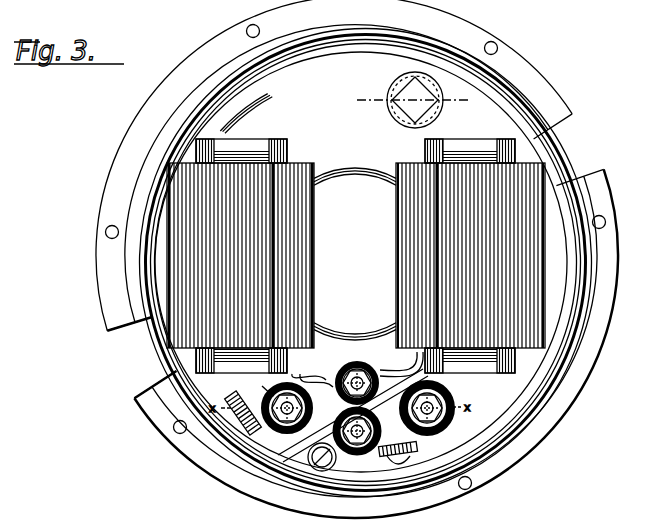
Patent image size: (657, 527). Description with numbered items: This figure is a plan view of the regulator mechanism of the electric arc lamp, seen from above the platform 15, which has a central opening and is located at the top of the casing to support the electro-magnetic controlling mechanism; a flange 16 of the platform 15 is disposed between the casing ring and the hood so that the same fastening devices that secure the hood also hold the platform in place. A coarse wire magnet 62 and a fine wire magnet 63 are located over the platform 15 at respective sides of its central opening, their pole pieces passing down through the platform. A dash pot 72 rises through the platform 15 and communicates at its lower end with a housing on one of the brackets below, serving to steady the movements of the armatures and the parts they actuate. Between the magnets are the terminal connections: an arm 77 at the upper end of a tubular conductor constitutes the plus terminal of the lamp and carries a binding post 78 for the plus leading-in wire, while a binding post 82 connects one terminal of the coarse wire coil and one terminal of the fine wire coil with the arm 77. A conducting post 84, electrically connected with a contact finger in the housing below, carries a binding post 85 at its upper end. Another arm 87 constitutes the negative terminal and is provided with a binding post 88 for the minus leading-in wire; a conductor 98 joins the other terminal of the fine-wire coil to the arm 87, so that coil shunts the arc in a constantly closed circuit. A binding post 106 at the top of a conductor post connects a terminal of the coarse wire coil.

The platform 15 is at (366, 263).
The flange 16 is at (600, 341).
The coarse wire magnet 62 is at (564, 196).
The fine wire magnet 63 is at (173, 180).
The dash pot 72 is at (390, 96).
The arm 77 is at (328, 376).
The binding post 78 is at (233, 398).
The binding post 82 is at (365, 371).
The conducting post 84 is at (326, 469).
The binding post 85 is at (358, 445).
The arm 87 is at (395, 456).
The binding post 88 is at (416, 450).
The conductor 98 is at (289, 458).
The binding post 106 is at (258, 387).